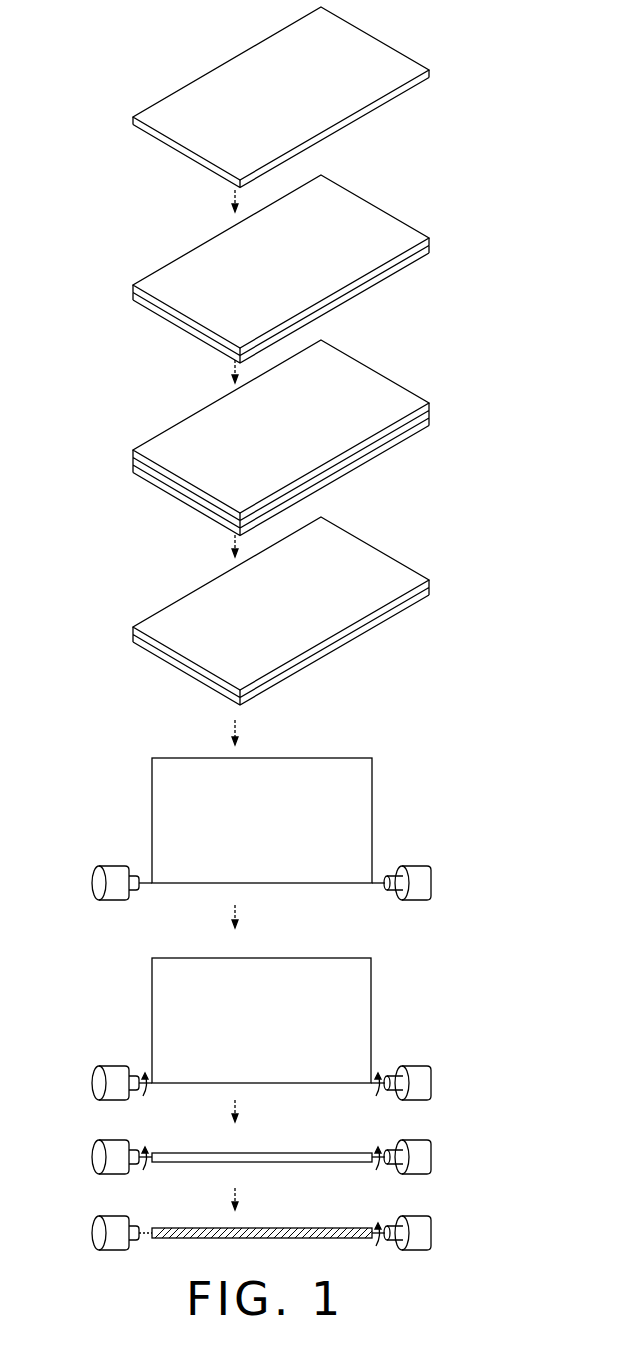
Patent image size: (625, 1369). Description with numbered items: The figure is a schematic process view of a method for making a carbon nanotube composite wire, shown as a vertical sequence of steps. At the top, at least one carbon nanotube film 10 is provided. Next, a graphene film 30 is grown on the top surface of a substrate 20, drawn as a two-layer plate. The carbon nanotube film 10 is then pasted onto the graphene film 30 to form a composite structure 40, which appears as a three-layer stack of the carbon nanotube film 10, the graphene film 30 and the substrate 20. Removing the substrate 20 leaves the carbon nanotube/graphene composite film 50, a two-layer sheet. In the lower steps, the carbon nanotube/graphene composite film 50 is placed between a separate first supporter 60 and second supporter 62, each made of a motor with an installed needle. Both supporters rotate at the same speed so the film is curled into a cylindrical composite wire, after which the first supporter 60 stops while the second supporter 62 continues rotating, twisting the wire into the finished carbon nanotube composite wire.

The carbon nanotube film 10 is at (243, 88).
The substrate 20 is at (422, 255).
The graphene film 30 is at (378, 230).
The composite structure 40 is at (495, 400).
The carbon nanotube/graphene composite film 50 is at (490, 565).
The first supporter 60 is at (113, 893).
The second supporter 62 is at (424, 895).